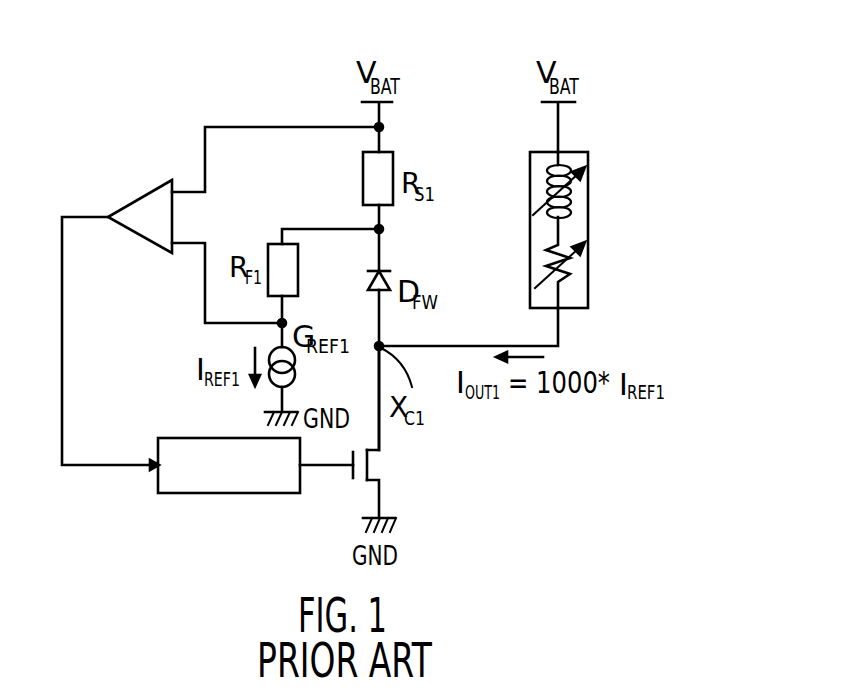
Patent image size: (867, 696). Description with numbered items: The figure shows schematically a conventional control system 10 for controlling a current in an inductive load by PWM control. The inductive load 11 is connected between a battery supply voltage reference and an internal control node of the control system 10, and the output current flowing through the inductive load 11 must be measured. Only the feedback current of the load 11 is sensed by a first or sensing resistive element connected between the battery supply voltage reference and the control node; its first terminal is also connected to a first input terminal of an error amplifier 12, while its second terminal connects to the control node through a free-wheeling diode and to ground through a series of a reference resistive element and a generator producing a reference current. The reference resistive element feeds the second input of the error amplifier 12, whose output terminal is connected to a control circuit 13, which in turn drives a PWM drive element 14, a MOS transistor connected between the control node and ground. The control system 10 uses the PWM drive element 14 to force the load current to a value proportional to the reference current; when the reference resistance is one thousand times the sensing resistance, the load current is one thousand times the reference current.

The control system 10 is at (102, 98).
The inductive load 11 is at (605, 212).
The error amplifier 12 is at (140, 206).
The control circuit 13 is at (233, 481).
The PWM drive element 14 is at (400, 464).